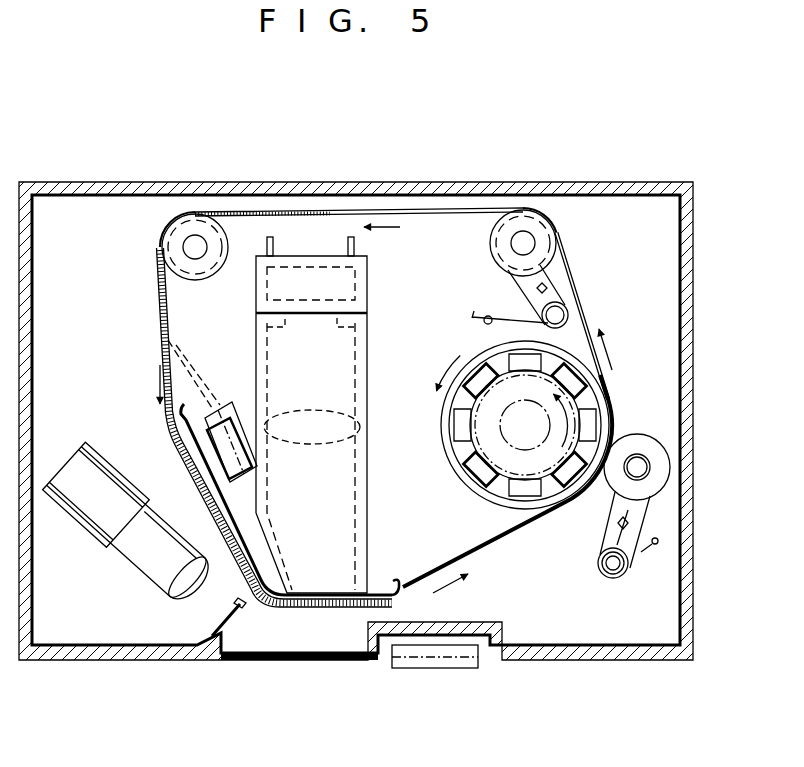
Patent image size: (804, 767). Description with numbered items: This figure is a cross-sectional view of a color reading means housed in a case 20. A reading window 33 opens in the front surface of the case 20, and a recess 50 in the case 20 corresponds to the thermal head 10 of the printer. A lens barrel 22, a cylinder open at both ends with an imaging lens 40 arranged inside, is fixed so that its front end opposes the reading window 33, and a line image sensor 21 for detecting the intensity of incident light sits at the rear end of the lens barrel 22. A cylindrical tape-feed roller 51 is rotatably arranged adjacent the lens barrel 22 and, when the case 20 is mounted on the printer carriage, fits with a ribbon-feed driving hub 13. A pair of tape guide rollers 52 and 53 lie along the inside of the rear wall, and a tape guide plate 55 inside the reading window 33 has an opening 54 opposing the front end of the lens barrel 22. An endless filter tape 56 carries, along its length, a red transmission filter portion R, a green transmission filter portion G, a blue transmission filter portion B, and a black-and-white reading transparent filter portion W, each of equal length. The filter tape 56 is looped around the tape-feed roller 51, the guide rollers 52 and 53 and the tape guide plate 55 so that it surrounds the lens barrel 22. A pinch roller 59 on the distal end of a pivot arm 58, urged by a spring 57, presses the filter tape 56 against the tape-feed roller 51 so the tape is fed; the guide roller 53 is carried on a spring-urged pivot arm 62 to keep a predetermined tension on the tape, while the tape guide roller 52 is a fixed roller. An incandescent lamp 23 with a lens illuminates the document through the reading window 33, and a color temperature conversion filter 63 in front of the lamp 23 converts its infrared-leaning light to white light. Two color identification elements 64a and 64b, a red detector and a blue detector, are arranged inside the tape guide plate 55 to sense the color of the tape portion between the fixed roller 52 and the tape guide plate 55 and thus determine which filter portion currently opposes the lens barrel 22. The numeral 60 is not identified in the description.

The thermal head 10 is at (410, 670).
The ribbon-feed driving hub 13 is at (500, 487).
The case 20 is at (607, 182).
The line image sensor 21 is at (340, 291).
The lens barrel 22 is at (368, 488).
The incandescent lamp 23 is at (148, 562).
The reading window 33 is at (326, 664).
The imaging lens 40 is at (318, 410).
The recess 50 is at (465, 648).
The tape-feed roller 51 is at (458, 482).
The tape guide roller 52 is at (176, 246).
The tape guide roller 53 is at (522, 226).
The opening 54 is at (340, 608).
The tape guide plate 55 is at (395, 578).
The endless filter tape 56 is at (590, 330).
The spring 57 is at (654, 547).
The pivot arm 58 is at (606, 530).
The pinch roller 59 is at (646, 450).
The lever 60 is at (488, 316).
The pivot arm 62 is at (558, 286).
The color temperature conversion filter 63 is at (224, 618).
The color identification element 64a is at (207, 470).
The color identification element 64b is at (227, 402).
The blue transmission filter portion B is at (162, 311).
The green transmission filter portion G is at (290, 608).
The red transmission filter portion R is at (520, 540).
The black-and-white reading transparent filter portion W is at (497, 219).